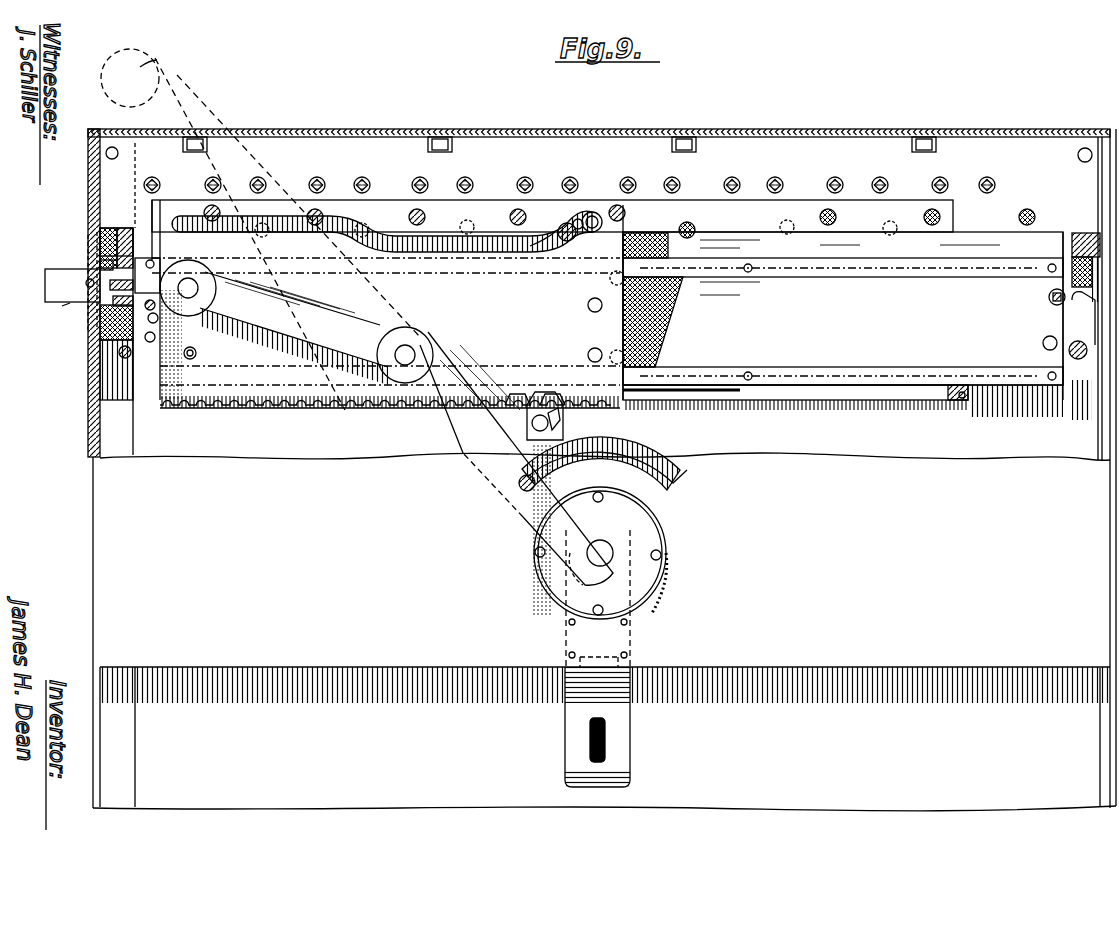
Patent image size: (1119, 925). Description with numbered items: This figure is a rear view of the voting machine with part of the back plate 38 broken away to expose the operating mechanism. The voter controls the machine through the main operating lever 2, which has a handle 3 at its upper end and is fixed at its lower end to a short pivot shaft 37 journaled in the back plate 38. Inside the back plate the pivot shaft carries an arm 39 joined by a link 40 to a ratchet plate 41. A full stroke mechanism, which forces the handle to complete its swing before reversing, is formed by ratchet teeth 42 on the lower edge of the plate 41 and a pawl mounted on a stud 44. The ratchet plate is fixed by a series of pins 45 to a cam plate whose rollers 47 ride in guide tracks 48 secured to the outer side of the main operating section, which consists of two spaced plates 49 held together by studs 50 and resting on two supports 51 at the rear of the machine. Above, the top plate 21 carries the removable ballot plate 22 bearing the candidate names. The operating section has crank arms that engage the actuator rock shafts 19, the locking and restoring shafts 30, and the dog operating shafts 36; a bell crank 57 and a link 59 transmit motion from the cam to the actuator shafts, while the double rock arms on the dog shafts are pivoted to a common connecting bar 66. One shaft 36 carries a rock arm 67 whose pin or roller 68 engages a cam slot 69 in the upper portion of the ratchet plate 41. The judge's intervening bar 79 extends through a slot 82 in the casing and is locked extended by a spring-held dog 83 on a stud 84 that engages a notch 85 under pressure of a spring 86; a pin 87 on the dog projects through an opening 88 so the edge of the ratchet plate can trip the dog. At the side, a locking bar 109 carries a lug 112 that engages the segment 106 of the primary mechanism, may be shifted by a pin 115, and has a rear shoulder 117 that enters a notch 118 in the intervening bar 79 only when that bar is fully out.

The main operating lever 2 is at (228, 104).
The handle 3 is at (160, 58).
The actuator rock shafts 19 is at (259, 178).
The top plate 21 is at (856, 131).
The ballot plate 22 is at (748, 131).
The locking and restoring shafts 30 is at (312, 213).
The dog operating shafts 36 is at (277, 240).
The pivot shaft 37 is at (604, 553).
The back plate 38 is at (605, 612).
The arm 39 is at (448, 425).
The link 40 is at (303, 325).
The ratchet plate 41 is at (327, 386).
The ratchet teeth 42 is at (277, 405).
The stud 44 is at (553, 424).
The pins 45 is at (197, 355).
The rollers 47 is at (645, 352).
The guide tracks 48 is at (780, 275).
The plates 49 is at (844, 308).
The studs 50 is at (118, 156).
The supports 51 is at (124, 228).
The bell crank 57 is at (952, 400).
The link 59 is at (782, 400).
The connecting bar 66 is at (567, 391).
The rock arm 67 is at (582, 219).
The pin or roller 68 is at (598, 214).
The cam slot 69 is at (535, 246).
The judge's intervening bar 79 is at (48, 292).
The slot 82 is at (100, 266).
The spring-held dog 83 is at (110, 382).
The stud 84 is at (158, 318).
The notch 85 is at (100, 305).
The spring 86 is at (155, 337).
The pin 87 is at (150, 260).
The opening 88 is at (152, 275).
The segment 106 is at (128, 312).
The locking bar 109 is at (100, 336).
The lug 112 is at (118, 332).
The pin 115 is at (62, 306).
The shoulder or lug 117 is at (100, 244).
The notch 118 is at (88, 272).